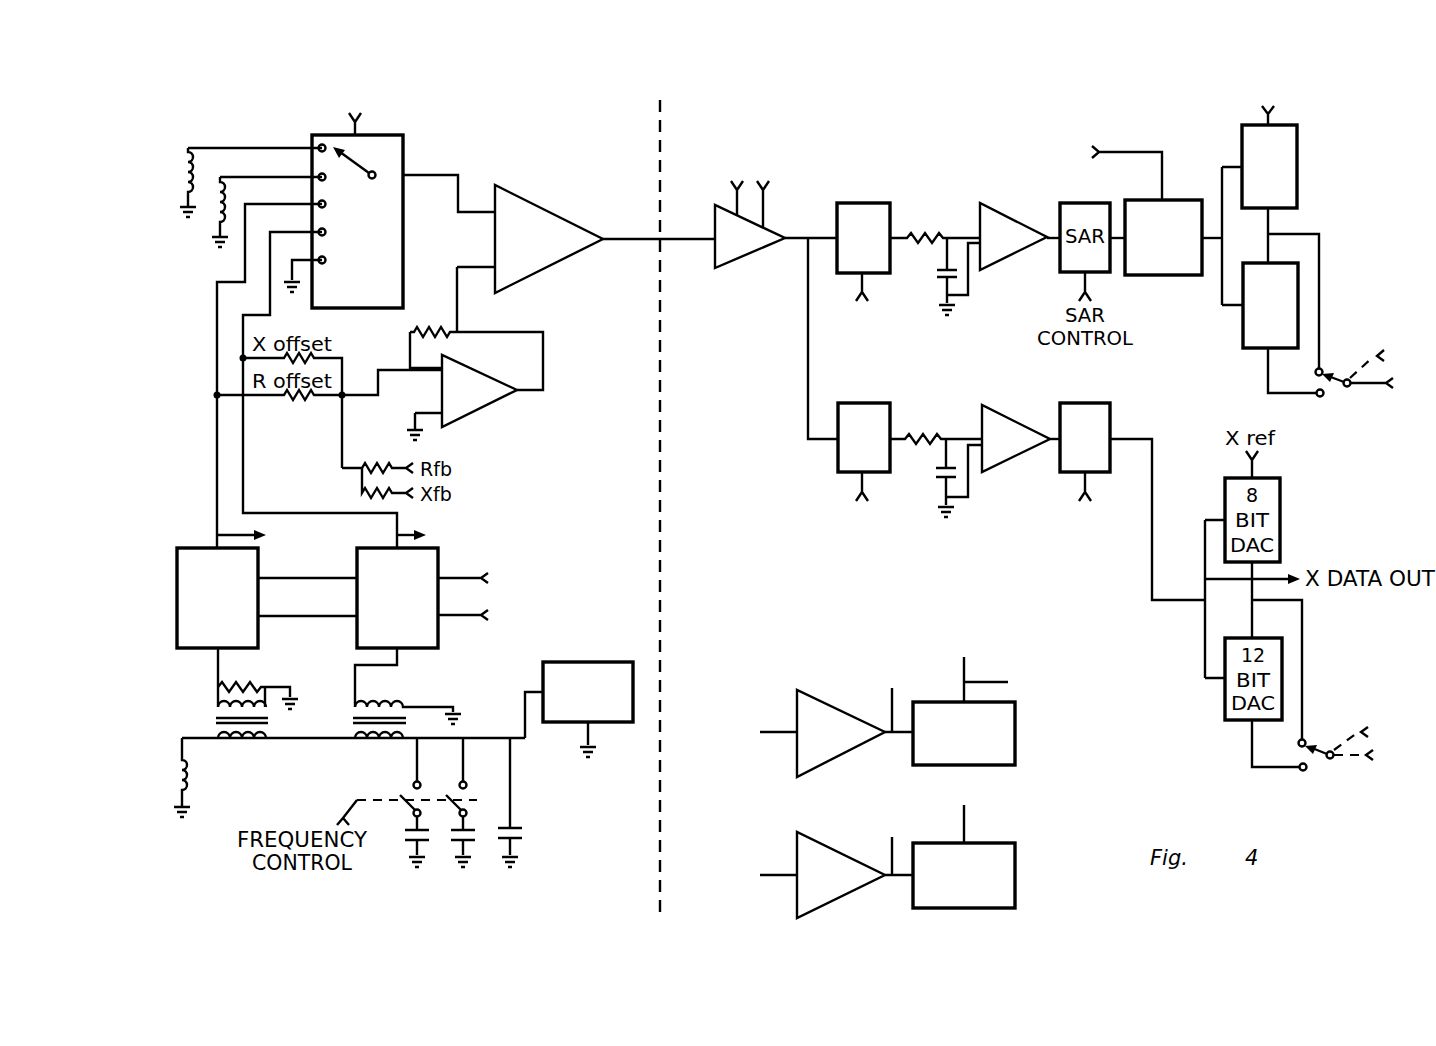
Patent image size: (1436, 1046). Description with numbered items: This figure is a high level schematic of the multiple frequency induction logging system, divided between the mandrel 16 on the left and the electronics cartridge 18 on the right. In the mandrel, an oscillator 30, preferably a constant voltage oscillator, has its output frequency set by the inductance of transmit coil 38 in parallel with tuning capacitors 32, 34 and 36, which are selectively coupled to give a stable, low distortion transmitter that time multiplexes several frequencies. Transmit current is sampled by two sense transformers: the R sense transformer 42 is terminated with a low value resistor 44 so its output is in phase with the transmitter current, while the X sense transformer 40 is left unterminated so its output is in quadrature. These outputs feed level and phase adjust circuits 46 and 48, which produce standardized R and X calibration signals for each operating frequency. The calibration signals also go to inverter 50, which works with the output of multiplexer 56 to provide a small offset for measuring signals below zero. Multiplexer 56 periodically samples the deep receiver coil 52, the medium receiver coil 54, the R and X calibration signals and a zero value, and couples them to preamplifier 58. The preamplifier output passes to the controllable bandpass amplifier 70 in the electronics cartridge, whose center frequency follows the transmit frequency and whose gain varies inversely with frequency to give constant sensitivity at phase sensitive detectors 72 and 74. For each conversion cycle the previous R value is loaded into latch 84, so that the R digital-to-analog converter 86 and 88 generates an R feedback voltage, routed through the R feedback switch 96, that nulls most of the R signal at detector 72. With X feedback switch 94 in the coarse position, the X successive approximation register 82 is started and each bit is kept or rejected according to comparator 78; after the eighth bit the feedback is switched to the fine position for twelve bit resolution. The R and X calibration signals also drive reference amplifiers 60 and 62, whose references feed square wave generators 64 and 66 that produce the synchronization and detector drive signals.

The mandrel section 16 is at (594, 420).
The electronics cartridge 18 is at (736, 418).
The oscillator 30 is at (554, 662).
The tuning capacitor 32 is at (522, 839).
The tuning capacitor 34 is at (452, 842).
The tuning capacitor 36 is at (405, 842).
The transmit coil 38 is at (188, 786).
The X sense transformer 40 is at (360, 721).
The R sense transformer 42 is at (218, 721).
The low value resistor 44 is at (218, 696).
The level and phase adjust circuit 46 is at (200, 548).
The level and phase adjust circuit 48 is at (438, 565).
The inverter 50 is at (478, 370).
The deep receiver coil 52 is at (186, 168).
The medium receiver coil 54 is at (215, 207).
The multiplexer 56 is at (403, 155).
The preamplifier 58 is at (565, 226).
The reference amplifier 60 is at (797, 712).
The reference amplifier 62 is at (797, 855).
The square wave generator 64 is at (1015, 727).
The square wave generator 66 is at (1015, 870).
The controllable bandpass amplifier 70 is at (715, 218).
The phase sensitive detector 72 is at (837, 225).
The phase sensitive detector 74 is at (864, 403).
The comparator 78 is at (1012, 461).
The X successive approximation register 82 is at (1085, 403).
The latch 84 is at (1163, 275).
The R digital-to-analog converter 86 is at (1242, 152).
The R digital-to-analog converter 88 is at (1255, 348).
The X feedback switch 94 is at (1336, 772).
The R feedback switch 96 is at (1355, 400).